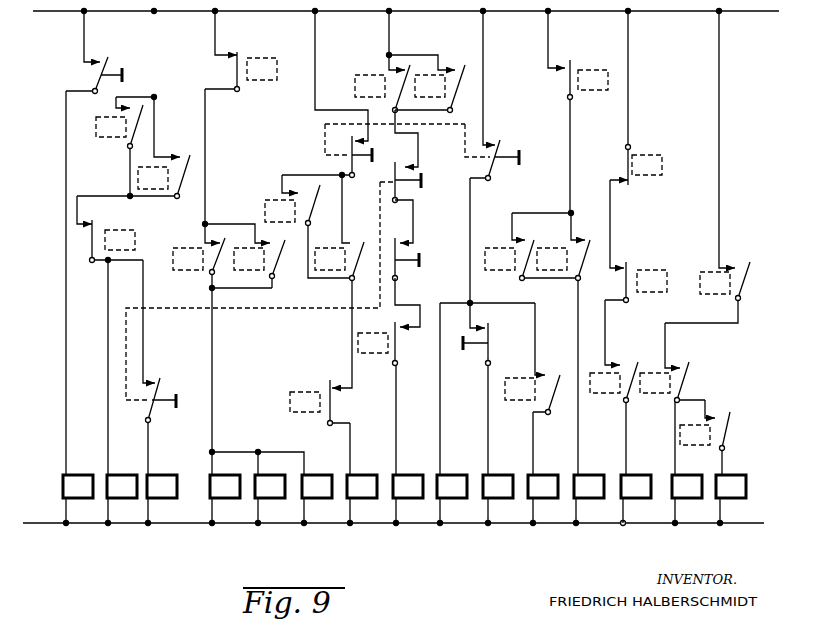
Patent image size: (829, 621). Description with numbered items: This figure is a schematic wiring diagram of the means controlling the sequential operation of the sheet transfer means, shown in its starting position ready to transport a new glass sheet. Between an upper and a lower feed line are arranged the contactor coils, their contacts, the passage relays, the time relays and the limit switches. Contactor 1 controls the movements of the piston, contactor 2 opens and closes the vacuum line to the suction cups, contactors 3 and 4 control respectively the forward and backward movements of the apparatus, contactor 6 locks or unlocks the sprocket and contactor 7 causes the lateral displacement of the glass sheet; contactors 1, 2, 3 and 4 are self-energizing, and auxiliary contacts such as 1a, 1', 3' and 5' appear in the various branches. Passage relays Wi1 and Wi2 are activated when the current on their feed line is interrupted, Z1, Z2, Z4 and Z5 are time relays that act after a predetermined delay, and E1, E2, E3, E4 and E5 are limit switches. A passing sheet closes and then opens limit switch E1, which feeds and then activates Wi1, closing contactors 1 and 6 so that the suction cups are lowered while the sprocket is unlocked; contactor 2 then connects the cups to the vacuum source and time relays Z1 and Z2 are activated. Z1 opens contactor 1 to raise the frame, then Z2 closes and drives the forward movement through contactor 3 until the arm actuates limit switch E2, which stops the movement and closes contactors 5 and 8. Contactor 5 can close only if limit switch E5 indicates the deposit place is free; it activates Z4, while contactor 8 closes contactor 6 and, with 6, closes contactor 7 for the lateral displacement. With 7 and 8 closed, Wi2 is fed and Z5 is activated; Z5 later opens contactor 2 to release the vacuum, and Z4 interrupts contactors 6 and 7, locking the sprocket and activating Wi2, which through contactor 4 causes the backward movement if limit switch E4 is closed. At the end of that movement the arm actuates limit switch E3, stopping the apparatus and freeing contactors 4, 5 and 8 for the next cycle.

The contactor 1 is at (408, 349).
The relay 1a and its contact 1a is at (157, 191).
The contact 1' of relay 1 1' is at (531, 257).
The contactor 2 is at (252, 271).
The contactor 3 is at (343, 389).
The contact 3' of relay 3 3' is at (389, 330).
The contactor 4 is at (445, 92).
The contactor 5 is at (499, 515).
The contacts 5' of relay 5 5' is at (615, 388).
The contactor 6 is at (598, 394).
The contactor 7 is at (712, 294).
The contactor 8 is at (648, 155).
The limit switch E1 is at (108, 72).
The limit switch E2 is at (362, 181).
The limit switch E3 is at (426, 183).
The limit switch E4 is at (418, 273).
The limit switch E5 is at (487, 278).
The passage relay Wi1 is at (112, 138).
The passage relay Wi2 is at (362, 72).
The time relay Z1 is at (135, 241).
The time relay Z2 is at (266, 206).
The time relay Z4 is at (598, 70).
The time relay Z5 is at (254, 82).